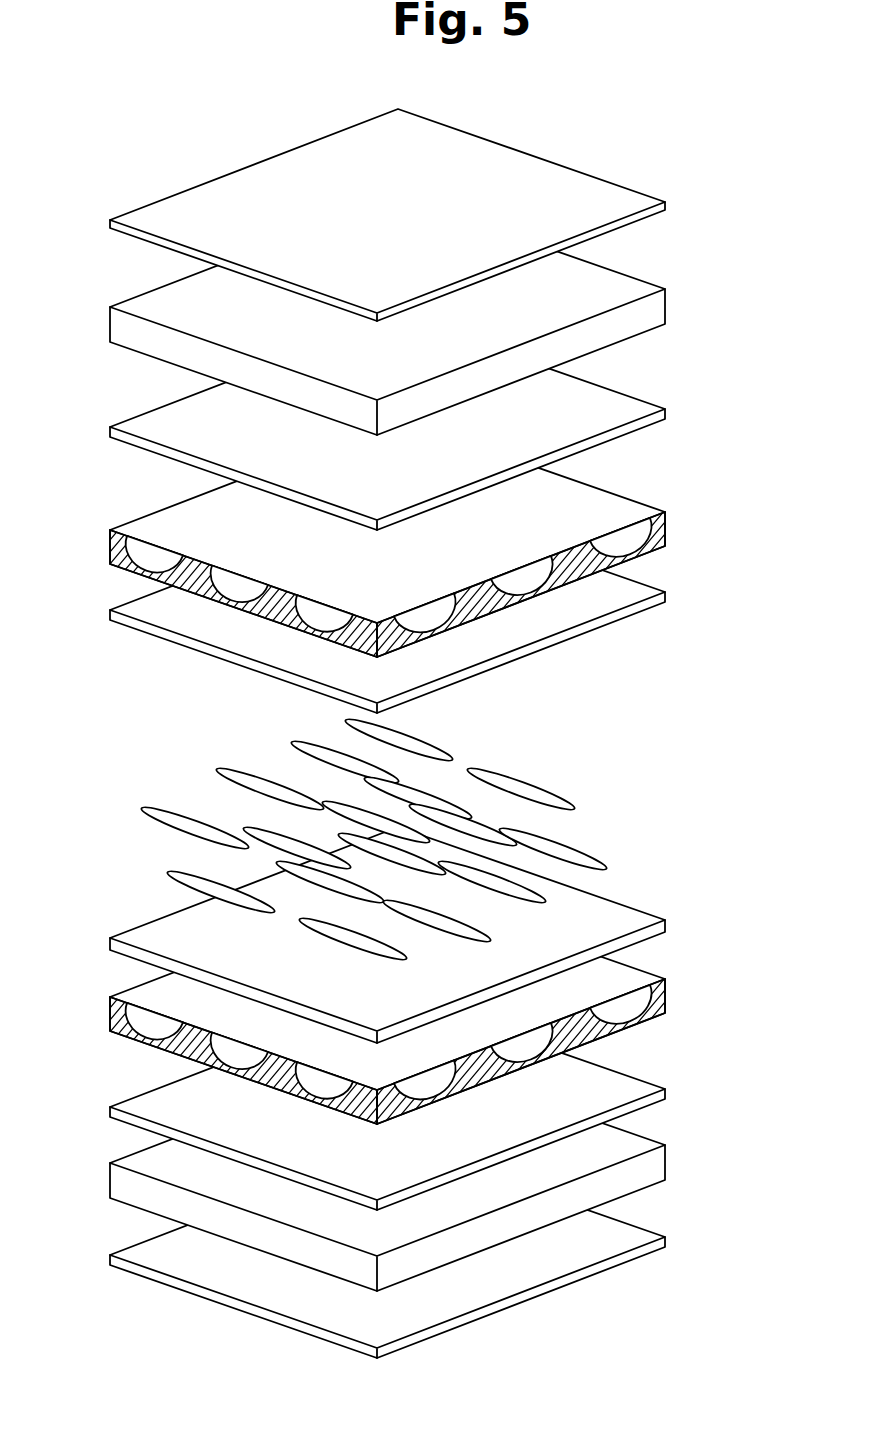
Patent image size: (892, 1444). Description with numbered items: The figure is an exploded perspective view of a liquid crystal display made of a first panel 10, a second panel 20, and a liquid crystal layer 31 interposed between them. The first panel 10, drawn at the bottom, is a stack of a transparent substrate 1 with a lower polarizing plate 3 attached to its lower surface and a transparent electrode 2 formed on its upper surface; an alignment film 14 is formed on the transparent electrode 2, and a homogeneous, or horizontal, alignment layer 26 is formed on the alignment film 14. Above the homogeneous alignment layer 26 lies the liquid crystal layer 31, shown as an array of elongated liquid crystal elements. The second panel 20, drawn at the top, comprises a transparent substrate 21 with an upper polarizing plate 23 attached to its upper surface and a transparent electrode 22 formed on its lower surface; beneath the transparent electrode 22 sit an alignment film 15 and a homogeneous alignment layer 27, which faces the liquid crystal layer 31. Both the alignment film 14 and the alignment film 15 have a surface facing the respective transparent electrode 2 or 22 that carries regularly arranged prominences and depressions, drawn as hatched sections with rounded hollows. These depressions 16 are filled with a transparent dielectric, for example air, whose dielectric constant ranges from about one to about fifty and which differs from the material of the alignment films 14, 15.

The first panel 10 is at (448, 1177).
The transparent substrate 1 is at (665, 1162).
The transparent electrode 2 is at (412, 1103).
The lower polarizing plate 3 is at (665, 1242).
The alignment film 14 is at (665, 996).
The alignment film 15 is at (665, 529).
The depressions 16 is at (627, 533).
The homogeneous alignment layer 26 is at (665, 926).
The homogeneous alignment layer 27 is at (665, 597).
The liquid crystal layer 31 is at (575, 808).
The second panel 20 is at (455, 319).
The transparent substrate 21 is at (665, 306).
The transparent electrode 22 is at (665, 414).
The upper polarizing plate 23 is at (418, 215).